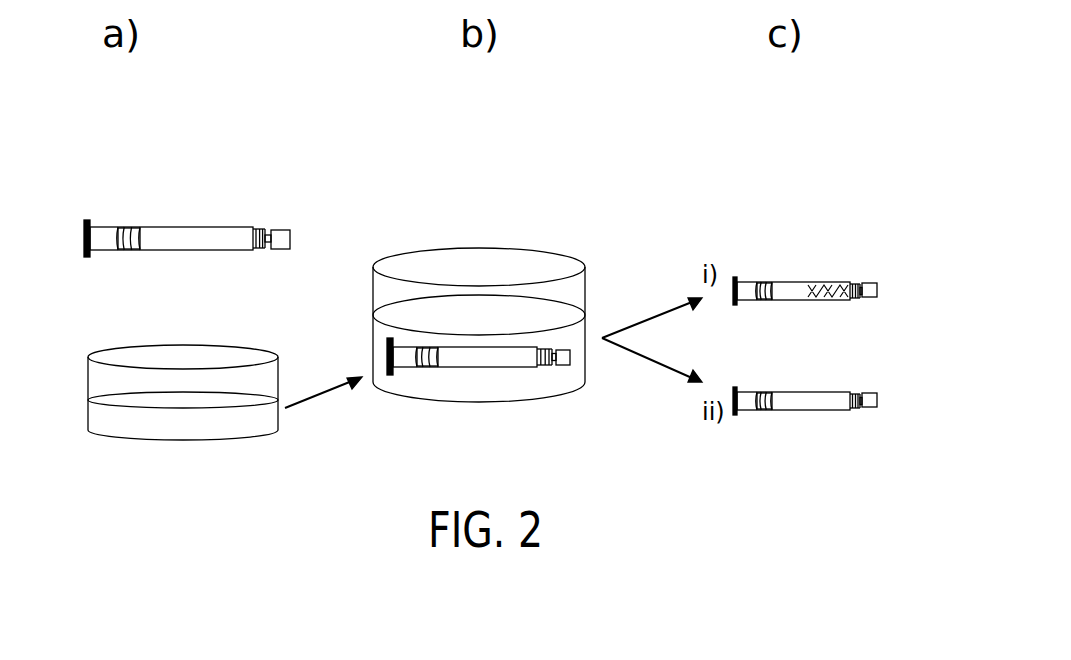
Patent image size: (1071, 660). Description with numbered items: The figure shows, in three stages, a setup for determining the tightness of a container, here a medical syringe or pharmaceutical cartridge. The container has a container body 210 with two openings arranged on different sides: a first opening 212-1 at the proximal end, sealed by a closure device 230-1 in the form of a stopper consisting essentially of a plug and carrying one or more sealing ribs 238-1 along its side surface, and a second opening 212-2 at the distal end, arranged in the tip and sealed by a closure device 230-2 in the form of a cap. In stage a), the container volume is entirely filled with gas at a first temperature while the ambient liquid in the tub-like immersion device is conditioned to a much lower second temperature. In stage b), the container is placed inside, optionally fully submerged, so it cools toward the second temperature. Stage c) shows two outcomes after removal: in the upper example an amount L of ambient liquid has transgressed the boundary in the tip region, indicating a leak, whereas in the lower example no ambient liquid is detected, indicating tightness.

The container body 210 is at (213, 227).
The first opening 212-1 is at (108, 245).
The second opening 212-2 is at (253, 227).
The closure device 230-1 is at (128, 232).
The closure device 230-2 is at (280, 230).
The sealing ribs 238-1 is at (130, 250).
The amount of ambient liquid L is at (820, 282).